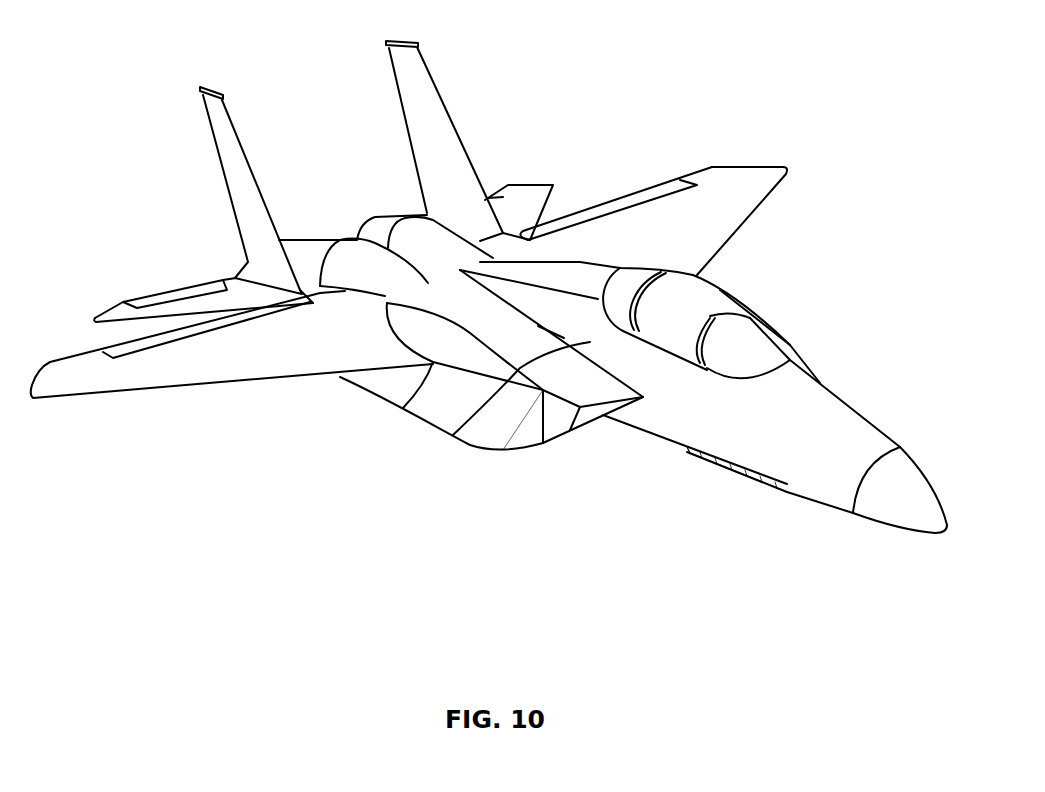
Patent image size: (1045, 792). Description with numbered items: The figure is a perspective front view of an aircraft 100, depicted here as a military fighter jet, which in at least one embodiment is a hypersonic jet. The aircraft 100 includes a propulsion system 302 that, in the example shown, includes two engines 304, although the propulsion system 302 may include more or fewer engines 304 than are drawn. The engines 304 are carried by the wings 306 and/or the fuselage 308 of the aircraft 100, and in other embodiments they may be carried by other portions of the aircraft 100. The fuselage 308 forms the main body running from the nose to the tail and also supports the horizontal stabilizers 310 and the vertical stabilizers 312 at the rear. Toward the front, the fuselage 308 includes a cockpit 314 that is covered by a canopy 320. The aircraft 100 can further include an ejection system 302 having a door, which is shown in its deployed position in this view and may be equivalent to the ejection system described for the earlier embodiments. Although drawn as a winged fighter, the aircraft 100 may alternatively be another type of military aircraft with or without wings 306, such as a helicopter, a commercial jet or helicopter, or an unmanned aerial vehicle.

The aircraft 100 is at (150, 43).
The propulsion system 302 is at (705, 465).
The engines 304 is at (789, 345).
The wings 306 is at (246, 382).
The fuselage 308 is at (455, 435).
The horizontal stabilizers 310 is at (195, 285).
The vertical stabilizers 312 is at (244, 152).
The cockpit 314 is at (711, 302).
The canopy 320 is at (693, 330).